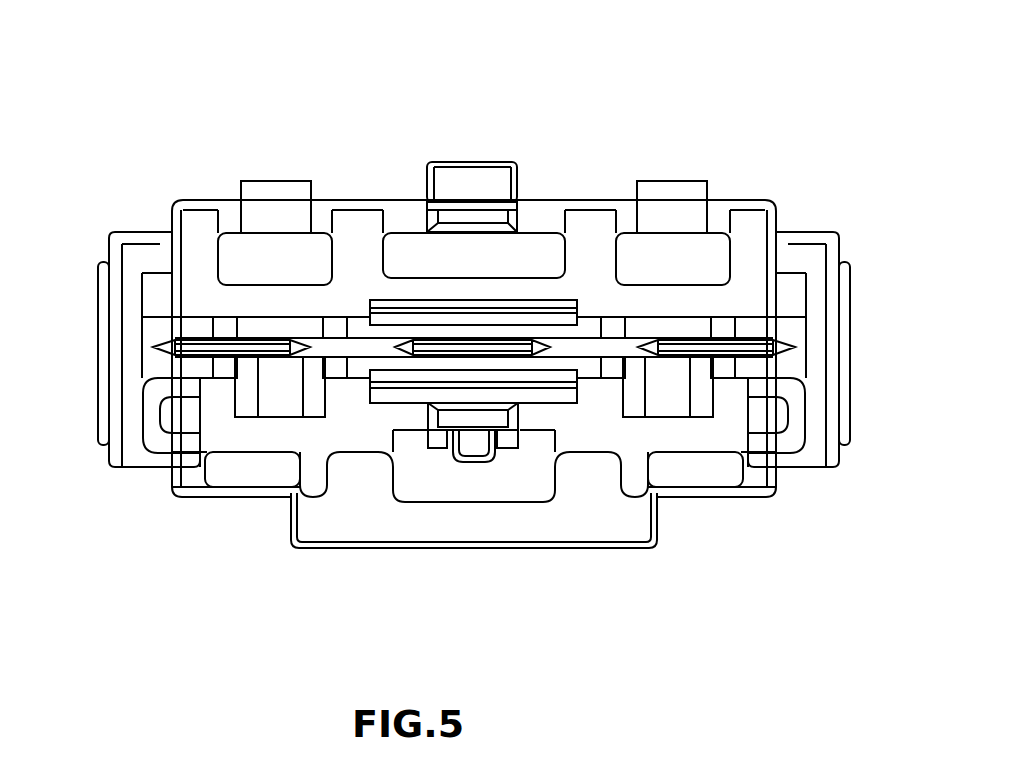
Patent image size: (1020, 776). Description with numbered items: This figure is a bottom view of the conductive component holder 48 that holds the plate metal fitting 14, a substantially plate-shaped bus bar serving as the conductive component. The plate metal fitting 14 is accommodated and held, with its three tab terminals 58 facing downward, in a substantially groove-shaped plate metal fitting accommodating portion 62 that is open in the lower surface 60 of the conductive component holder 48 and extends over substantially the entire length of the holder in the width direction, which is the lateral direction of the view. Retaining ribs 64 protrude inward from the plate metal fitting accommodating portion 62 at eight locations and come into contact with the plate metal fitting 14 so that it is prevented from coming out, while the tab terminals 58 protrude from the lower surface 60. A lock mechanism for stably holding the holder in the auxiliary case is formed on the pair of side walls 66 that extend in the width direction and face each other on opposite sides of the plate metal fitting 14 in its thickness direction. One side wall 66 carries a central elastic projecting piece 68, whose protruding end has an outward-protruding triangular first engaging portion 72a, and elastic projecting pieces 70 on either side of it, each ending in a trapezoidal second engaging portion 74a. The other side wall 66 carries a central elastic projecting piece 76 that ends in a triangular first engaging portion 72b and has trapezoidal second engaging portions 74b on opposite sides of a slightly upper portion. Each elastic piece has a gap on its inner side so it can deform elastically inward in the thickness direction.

The conductive component holder 48 is at (519, 84).
The plate metal fitting 14 is at (586, 345).
The tab terminals 58 is at (460, 345).
The lower surface 60 is at (775, 300).
The plate metal fitting accommodating portion 62 is at (197, 380).
The retaining ribs 64 is at (337, 330).
The side wall 66 is at (750, 190).
The elastic projecting piece 68 is at (478, 219).
The elastic projecting pieces 70 is at (277, 214).
The first engaging portion 72a is at (472, 183).
The first engaging portion 72b is at (473, 455).
The second engaging portions 74a is at (272, 188).
The second engaging portions 74b is at (435, 442).
The elastic projecting piece 76 is at (463, 415).